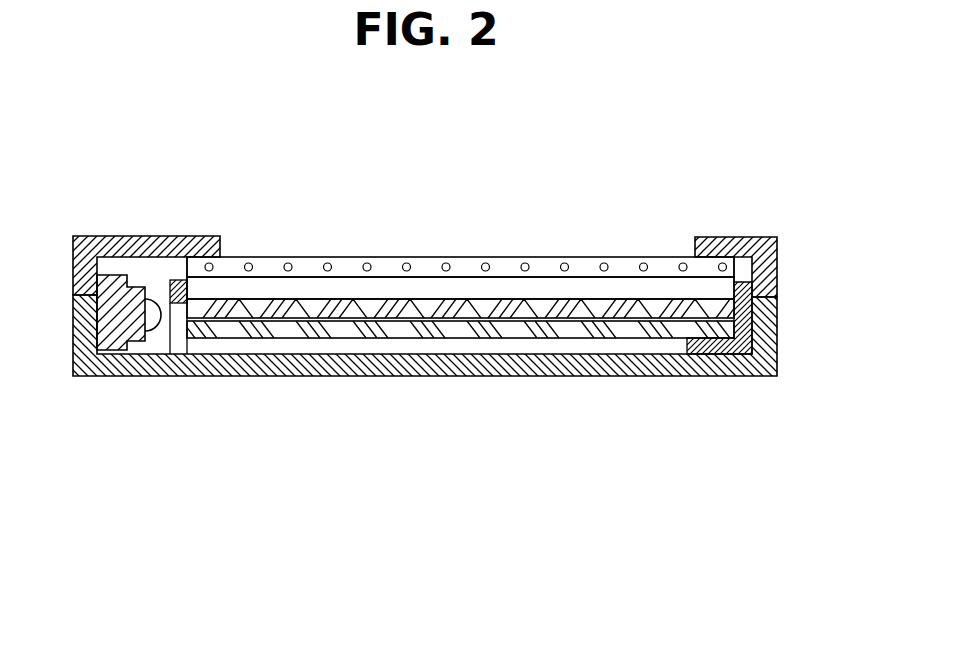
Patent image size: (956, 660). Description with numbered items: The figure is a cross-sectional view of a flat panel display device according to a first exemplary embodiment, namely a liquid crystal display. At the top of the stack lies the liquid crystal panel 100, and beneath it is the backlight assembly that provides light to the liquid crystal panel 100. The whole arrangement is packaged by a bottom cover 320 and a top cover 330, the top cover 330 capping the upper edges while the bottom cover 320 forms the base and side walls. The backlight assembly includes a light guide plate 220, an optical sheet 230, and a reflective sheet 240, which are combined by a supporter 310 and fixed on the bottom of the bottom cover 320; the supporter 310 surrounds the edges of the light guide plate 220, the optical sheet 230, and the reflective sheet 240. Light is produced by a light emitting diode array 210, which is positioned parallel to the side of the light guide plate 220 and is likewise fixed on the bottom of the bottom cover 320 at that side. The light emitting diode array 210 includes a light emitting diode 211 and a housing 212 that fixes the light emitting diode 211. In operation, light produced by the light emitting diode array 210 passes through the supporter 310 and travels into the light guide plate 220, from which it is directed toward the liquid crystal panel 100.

The liquid crystal panel 100 is at (347, 265).
The light emitting diode array 210 is at (130, 388).
The light emitting diode 211 is at (158, 332).
The housing 212 is at (109, 338).
The light guide plate 220 is at (256, 310).
The optical sheet 230 is at (267, 287).
The reflective sheet 240 is at (398, 327).
The supporter 310 is at (178, 280).
The bottom cover 320 is at (542, 370).
The top cover 330 is at (107, 235).